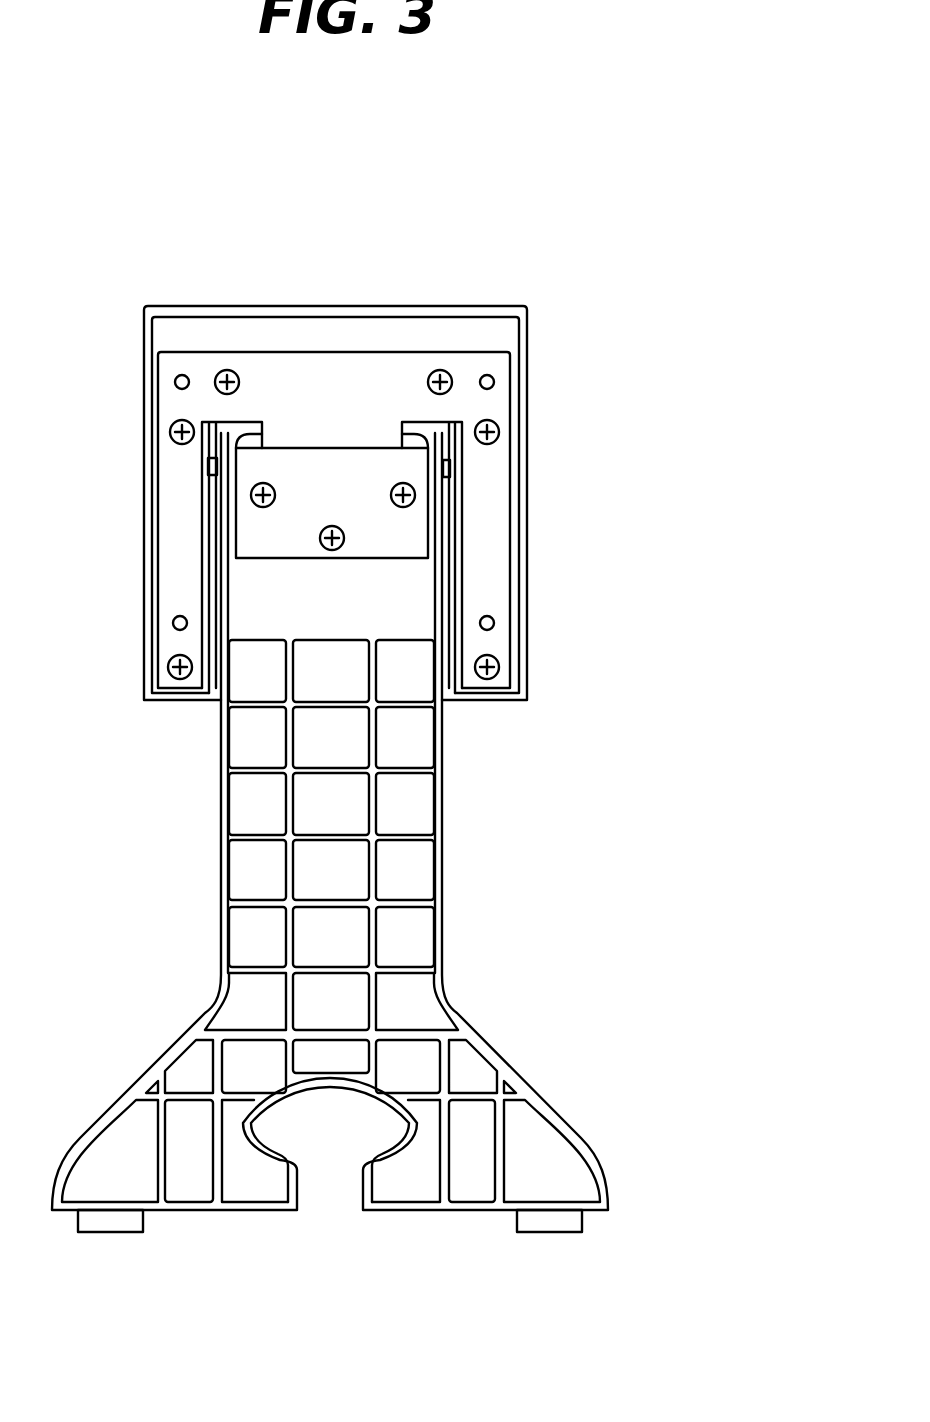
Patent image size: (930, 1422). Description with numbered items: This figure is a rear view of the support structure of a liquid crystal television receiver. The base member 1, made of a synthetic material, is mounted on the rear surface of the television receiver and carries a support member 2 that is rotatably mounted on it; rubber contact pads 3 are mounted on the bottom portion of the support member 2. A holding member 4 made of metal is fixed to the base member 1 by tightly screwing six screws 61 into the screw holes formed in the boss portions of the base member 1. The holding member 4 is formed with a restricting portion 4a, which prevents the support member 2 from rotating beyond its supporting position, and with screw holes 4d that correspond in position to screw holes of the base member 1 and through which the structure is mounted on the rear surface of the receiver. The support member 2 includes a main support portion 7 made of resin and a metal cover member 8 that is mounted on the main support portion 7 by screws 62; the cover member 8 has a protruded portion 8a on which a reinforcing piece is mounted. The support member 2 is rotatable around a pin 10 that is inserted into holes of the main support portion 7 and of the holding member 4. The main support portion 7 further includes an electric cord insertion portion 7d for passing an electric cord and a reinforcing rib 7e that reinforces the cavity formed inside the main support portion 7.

The base member 1 is at (308, 306).
The support member 2 is at (330, 881).
The contact pads 3 is at (108, 1218).
The holding member 4 is at (192, 527).
The restricting portion 4a is at (333, 437).
The screw holes 4d is at (176, 389).
The screws 61 is at (229, 370).
The screws 62 is at (253, 493).
The main support portion 7 is at (442, 930).
The electric cord insertion portion 7d is at (333, 1083).
The reinforcing rib 7e is at (377, 798).
The cover member 8 is at (277, 540).
The protruded portion 8a is at (427, 452).
The pin 10 is at (450, 473).